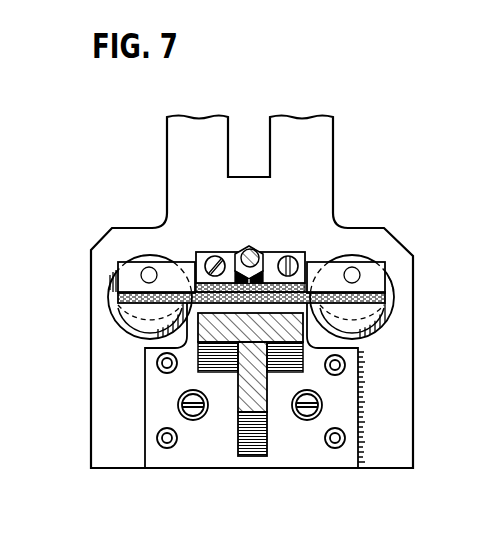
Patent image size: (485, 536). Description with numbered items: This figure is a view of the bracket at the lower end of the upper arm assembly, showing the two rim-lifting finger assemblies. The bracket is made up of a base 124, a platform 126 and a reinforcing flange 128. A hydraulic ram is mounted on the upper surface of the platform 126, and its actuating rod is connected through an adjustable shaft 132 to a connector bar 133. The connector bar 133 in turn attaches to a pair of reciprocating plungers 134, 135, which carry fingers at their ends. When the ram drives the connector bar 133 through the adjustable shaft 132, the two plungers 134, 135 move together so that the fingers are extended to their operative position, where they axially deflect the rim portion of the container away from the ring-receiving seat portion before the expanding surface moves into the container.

The base 124 is at (338, 414).
The platform 126 is at (287, 333).
The reinforcing flange 128 is at (252, 400).
The adjustable shaft 132 is at (258, 240).
The connector bar 133 is at (280, 254).
The reciprocating plunger 134 is at (127, 317).
The reciprocating plunger 135 is at (392, 320).